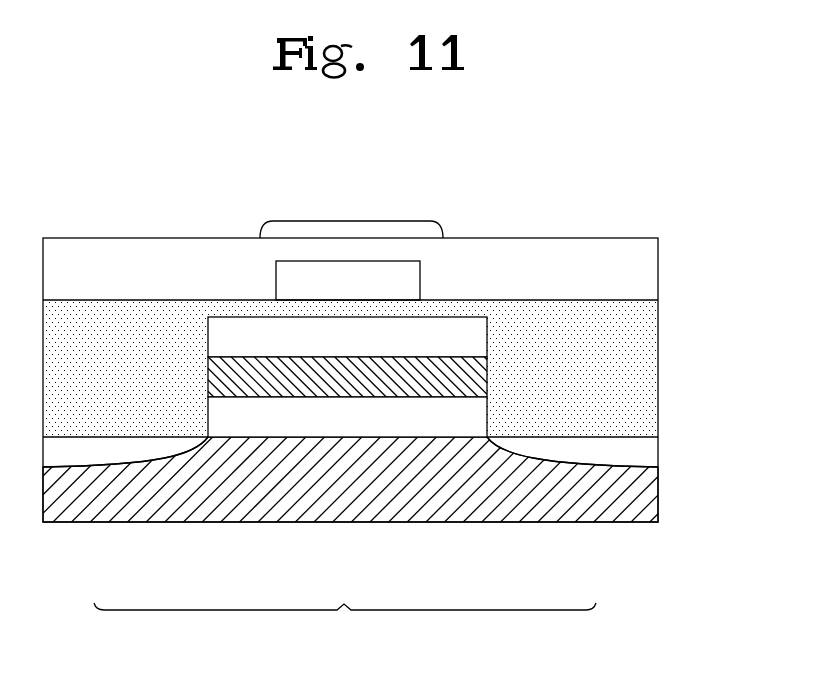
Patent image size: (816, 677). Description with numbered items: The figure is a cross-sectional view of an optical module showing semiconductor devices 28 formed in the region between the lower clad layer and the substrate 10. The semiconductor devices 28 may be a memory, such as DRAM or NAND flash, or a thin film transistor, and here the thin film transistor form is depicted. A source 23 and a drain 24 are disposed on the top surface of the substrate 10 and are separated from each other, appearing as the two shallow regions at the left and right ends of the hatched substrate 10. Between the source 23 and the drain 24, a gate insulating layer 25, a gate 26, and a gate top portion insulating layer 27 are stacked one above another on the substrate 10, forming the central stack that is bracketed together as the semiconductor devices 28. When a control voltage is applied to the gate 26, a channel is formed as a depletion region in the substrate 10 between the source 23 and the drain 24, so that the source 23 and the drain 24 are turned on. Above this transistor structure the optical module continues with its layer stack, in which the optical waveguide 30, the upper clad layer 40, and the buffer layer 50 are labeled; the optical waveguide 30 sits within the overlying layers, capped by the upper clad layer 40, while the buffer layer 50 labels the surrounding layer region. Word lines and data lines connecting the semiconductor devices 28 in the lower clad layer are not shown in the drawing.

The substrate 10 is at (650, 500).
The source 23 is at (107, 452).
The drain 24 is at (578, 452).
The gate insulating layer 25 is at (447, 414).
The gate 26 is at (361, 382).
The gate top portion insulating layer 27 is at (262, 340).
The semiconductor devices 28 is at (345, 624).
The optical waveguide 30 is at (398, 272).
The upper clad layer 40 is at (318, 229).
The buffer layer 50 is at (648, 267).